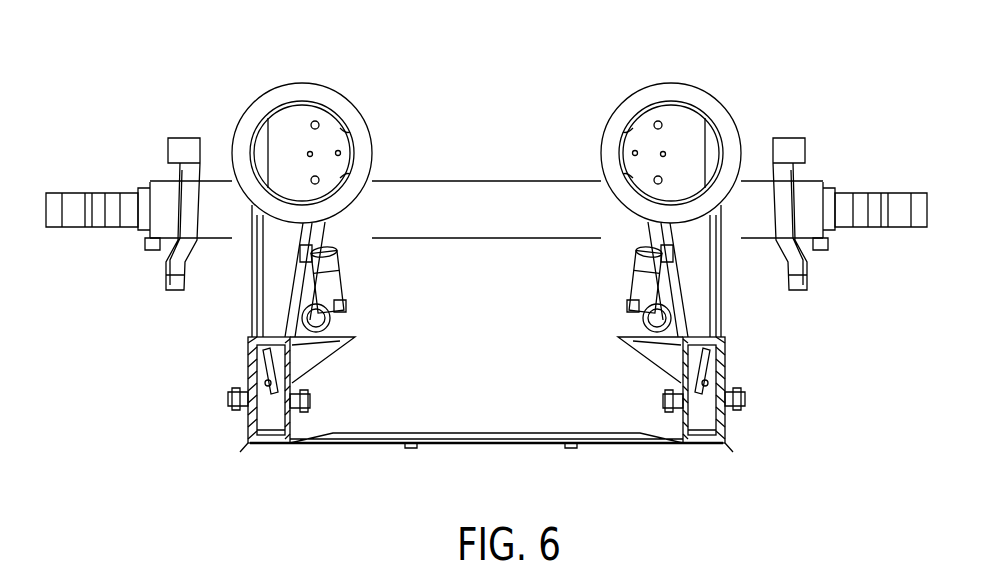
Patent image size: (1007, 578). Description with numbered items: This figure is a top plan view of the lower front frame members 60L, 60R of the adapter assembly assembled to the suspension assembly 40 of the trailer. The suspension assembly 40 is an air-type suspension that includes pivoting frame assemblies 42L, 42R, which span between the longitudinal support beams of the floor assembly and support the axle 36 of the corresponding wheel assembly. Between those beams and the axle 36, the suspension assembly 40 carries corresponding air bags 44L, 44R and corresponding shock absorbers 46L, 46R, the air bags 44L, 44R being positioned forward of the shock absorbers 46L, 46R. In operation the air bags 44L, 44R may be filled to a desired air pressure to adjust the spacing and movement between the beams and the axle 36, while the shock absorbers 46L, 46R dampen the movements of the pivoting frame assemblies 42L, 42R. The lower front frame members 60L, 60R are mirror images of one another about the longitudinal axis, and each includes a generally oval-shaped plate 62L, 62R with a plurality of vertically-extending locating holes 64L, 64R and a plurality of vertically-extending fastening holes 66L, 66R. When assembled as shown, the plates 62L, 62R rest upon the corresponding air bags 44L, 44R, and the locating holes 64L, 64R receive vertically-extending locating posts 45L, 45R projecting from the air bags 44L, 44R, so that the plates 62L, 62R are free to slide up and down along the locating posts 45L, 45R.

The axle 36 is at (492, 193).
The suspension assembly 40 is at (205, 462).
The pivoting frame assembly 42L is at (250, 443).
The pivoting frame assembly 42R is at (723, 443).
The air bag 44L is at (260, 103).
The air bag 44R is at (706, 103).
The locating post 45L is at (320, 183).
The locating post 45R is at (655, 185).
The shock absorber 46L is at (330, 288).
The shock absorber 46R is at (652, 290).
The lower front frame member 60L is at (303, 77).
The lower front frame member 60R is at (674, 77).
The plate 62L is at (275, 150).
The plate 62R is at (693, 150).
The locating hole 64L is at (336, 111).
The locating hole 64R is at (648, 110).
The fastening hole 66L is at (358, 135).
The fastening hole 66R is at (615, 135).